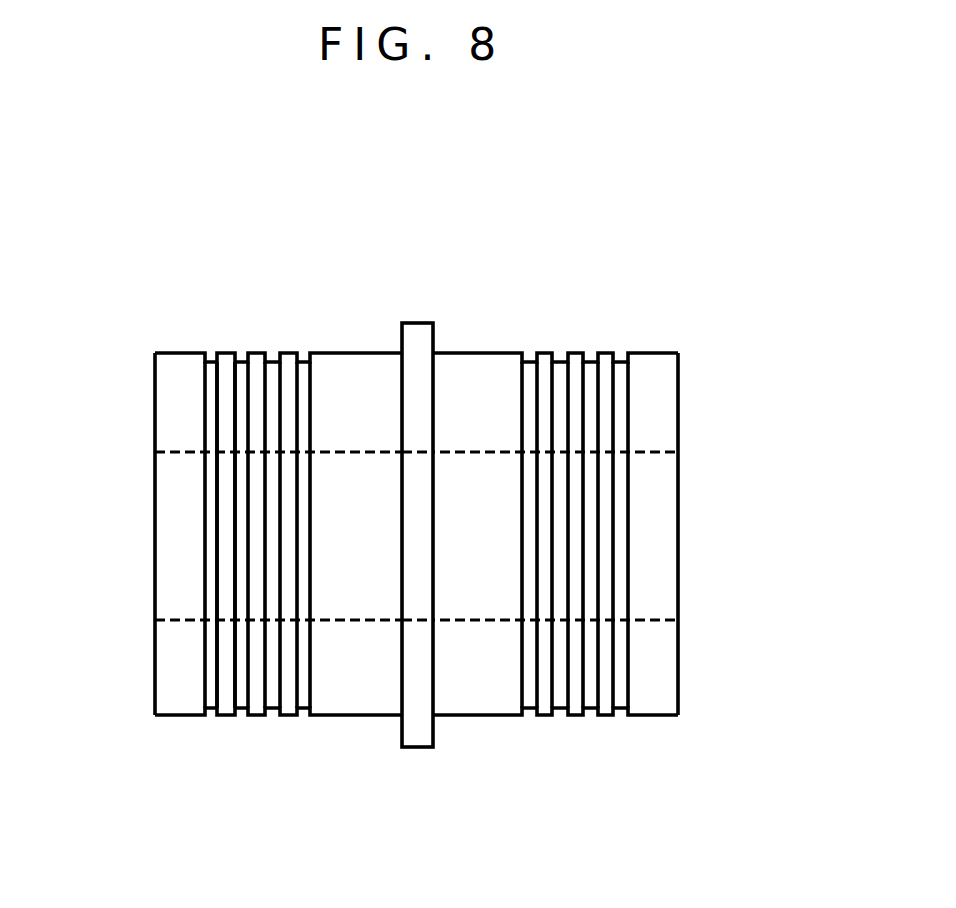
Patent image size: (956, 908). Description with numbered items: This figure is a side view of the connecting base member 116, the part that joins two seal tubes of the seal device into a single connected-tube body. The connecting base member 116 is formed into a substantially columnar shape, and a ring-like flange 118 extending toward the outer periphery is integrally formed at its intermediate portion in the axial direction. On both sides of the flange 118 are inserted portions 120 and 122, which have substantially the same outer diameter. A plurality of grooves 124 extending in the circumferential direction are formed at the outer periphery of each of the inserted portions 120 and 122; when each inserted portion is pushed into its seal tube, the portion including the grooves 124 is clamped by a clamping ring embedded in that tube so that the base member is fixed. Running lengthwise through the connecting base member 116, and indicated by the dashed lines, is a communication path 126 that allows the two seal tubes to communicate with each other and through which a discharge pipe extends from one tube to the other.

The connecting base member 116 is at (718, 276).
The flange 118 is at (412, 749).
The inserted portion 120 is at (487, 355).
The inserted portion 122 is at (333, 718).
The grooves 124 is at (272, 357).
The communication path 126 is at (227, 617).